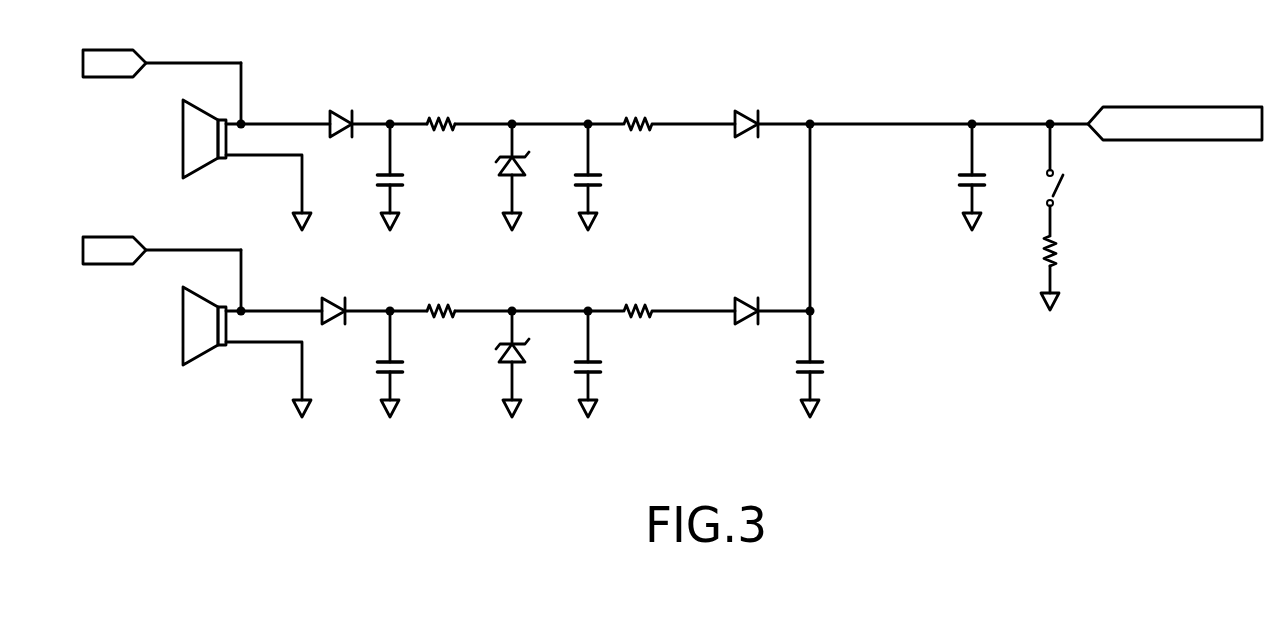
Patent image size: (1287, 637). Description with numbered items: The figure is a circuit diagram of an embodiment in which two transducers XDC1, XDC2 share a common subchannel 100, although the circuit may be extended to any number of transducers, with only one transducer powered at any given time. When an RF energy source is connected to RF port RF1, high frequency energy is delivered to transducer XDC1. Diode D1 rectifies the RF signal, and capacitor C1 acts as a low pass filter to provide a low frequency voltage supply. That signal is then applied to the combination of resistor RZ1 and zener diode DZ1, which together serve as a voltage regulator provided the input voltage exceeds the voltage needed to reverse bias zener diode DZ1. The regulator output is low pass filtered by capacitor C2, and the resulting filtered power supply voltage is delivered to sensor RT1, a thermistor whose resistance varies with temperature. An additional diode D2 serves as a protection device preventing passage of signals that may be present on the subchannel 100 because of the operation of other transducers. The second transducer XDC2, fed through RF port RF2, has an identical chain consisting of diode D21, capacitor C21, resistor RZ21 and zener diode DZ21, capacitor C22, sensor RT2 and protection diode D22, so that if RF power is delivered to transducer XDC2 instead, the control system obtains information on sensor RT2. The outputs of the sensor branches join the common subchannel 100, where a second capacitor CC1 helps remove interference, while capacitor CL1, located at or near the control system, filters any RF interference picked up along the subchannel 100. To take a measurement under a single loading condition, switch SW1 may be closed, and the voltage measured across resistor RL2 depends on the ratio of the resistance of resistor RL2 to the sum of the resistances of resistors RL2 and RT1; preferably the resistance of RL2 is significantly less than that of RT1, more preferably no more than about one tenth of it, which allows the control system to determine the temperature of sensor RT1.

The subchannel 100 is at (940, 118).
The RF port RF1 is at (162, 64).
The RF port RF2 is at (162, 251).
The transducer XDC1 is at (256, 165).
The transducer XDC2 is at (252, 352).
The diode D1 is at (340, 110).
The additional diode D2 is at (747, 110).
The diode D21 is at (330, 296).
The additional diode D22 is at (752, 296).
The capacitor C1 is at (399, 177).
The capacitor C2 is at (598, 177).
The capacitor C21 is at (404, 364).
The capacitor C22 is at (603, 364).
The resistor RZ1 is at (448, 109).
The resistor RZ21 is at (447, 295).
The zener diode DZ1 is at (532, 177).
The zener diode DZ21 is at (538, 364).
The sensor RT1 is at (644, 108).
The sensor RT2 is at (646, 294).
The second capacitor CC1 is at (828, 364).
The capacitor CL1 is at (986, 177).
The switch SW1 is at (1080, 179).
The resistor RL2 is at (1069, 273).